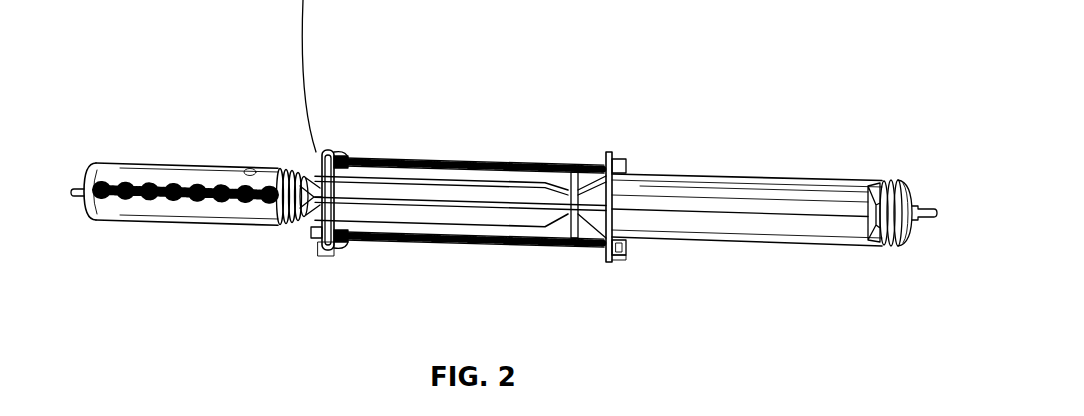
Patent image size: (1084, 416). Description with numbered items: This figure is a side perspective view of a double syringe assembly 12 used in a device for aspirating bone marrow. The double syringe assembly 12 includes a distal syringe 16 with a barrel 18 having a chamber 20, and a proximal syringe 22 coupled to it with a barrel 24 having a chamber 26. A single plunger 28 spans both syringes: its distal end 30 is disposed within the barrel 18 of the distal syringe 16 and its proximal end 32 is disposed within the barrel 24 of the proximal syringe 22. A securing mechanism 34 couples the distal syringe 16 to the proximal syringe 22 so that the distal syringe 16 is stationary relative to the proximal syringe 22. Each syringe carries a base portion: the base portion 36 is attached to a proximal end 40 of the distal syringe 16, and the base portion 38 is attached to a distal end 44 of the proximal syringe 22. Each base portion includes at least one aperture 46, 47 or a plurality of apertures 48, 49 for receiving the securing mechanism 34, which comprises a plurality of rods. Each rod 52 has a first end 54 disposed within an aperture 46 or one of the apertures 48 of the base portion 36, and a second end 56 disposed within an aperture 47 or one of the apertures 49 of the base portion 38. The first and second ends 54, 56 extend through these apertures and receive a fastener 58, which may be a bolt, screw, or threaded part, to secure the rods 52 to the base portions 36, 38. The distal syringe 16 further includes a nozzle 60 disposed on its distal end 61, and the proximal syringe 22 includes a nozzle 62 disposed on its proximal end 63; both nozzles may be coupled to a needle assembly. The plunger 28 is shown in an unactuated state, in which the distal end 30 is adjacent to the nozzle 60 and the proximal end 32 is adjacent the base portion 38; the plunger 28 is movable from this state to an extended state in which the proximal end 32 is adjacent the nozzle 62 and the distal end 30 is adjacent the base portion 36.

The double syringe assembly 12 is at (455, 76).
The distal syringe 16 is at (781, 207).
The barrel 18 is at (736, 240).
The chamber 20 is at (713, 238).
The proximal syringe 22 is at (185, 214).
The barrel 24 is at (226, 226).
The chamber 26 is at (152, 223).
The plunger 28 is at (428, 183).
The distal end 30 is at (886, 183).
The proximal end 32 is at (300, 166).
The securing mechanism 34 is at (526, 156).
The base portion 36 is at (659, 185).
The base portion 38 is at (320, 150).
The proximal end 40 is at (657, 177).
The distal end 44 is at (283, 240).
The aperture 46 is at (619, 259).
The aperture 47 is at (331, 257).
The plurality of apertures 48 is at (607, 152).
The plurality of apertures 49 is at (333, 152).
The rod 52 is at (440, 158).
The first end 54 is at (573, 172).
The second end 56 is at (347, 160).
The fastener 58 is at (620, 158).
The nozzle 60 is at (926, 220).
The distal end 61 is at (859, 234).
The nozzle 62 is at (78, 191).
The proximal end 63 is at (100, 214).